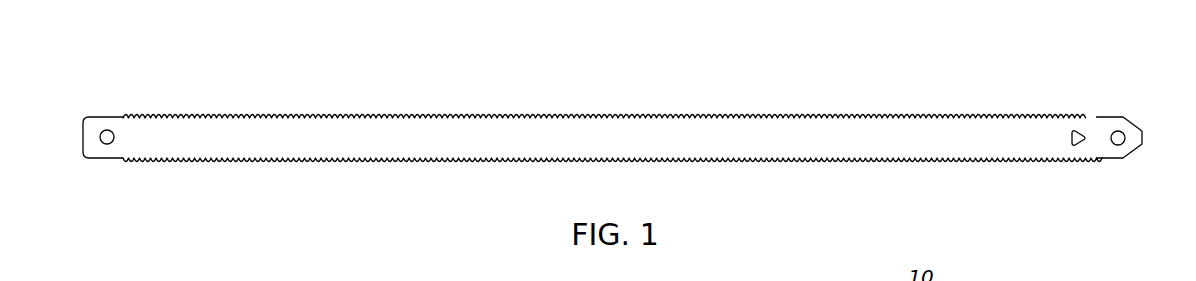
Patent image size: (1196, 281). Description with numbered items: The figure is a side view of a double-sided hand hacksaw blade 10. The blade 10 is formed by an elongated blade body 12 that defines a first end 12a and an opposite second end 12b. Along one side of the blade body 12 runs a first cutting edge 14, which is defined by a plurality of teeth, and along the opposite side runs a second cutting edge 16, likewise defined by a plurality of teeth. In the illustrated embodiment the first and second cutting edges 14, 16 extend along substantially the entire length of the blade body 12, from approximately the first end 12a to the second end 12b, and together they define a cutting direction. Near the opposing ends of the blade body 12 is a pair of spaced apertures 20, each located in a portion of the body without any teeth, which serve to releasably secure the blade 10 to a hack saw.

The double-sided hand hacksaw blade 10 is at (942, 60).
The blade body 12 is at (842, 126).
The first end 12a is at (1142, 137).
The second end 12b is at (83, 144).
The first cutting edge 14 is at (223, 112).
The second cutting edge 16 is at (339, 166).
The apertures 20 is at (107, 130).